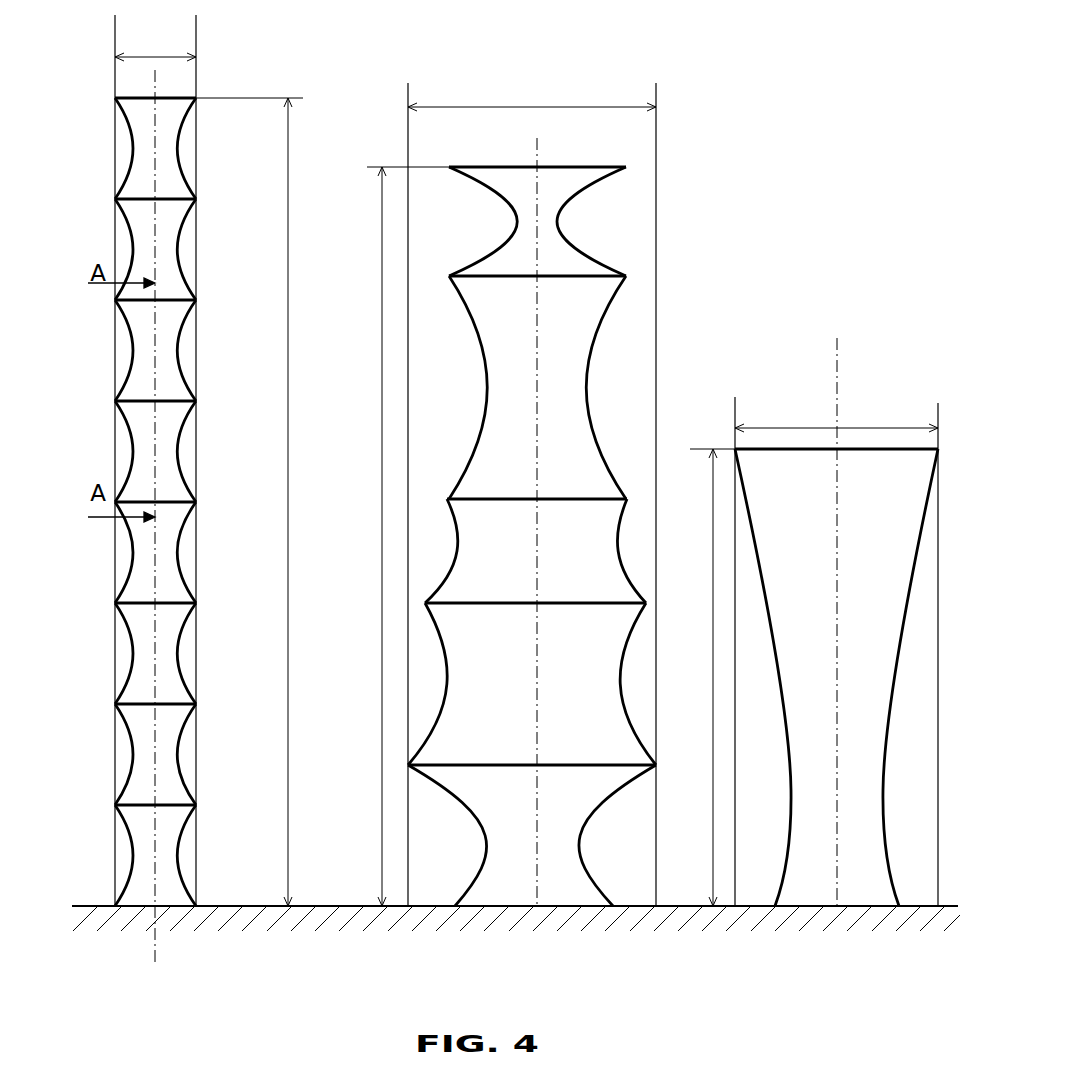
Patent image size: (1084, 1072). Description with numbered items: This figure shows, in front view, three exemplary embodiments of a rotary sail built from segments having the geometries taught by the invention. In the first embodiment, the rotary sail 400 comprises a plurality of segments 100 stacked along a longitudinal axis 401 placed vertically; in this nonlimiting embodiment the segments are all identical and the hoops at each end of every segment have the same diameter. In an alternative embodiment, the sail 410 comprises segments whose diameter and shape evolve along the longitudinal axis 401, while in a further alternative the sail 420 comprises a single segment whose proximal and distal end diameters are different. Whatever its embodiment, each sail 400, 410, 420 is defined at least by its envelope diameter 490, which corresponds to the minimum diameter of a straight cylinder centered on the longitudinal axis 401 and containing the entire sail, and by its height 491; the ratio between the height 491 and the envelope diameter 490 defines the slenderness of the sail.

The segment 100 is at (180, 849).
The rotary sail 400 is at (152, 502).
The longitudinal axis 401 is at (157, 436).
The sail 410 is at (617, 363).
The sail 420 is at (866, 347).
The envelope diameter 490 is at (156, 56).
The height 491 is at (382, 458).